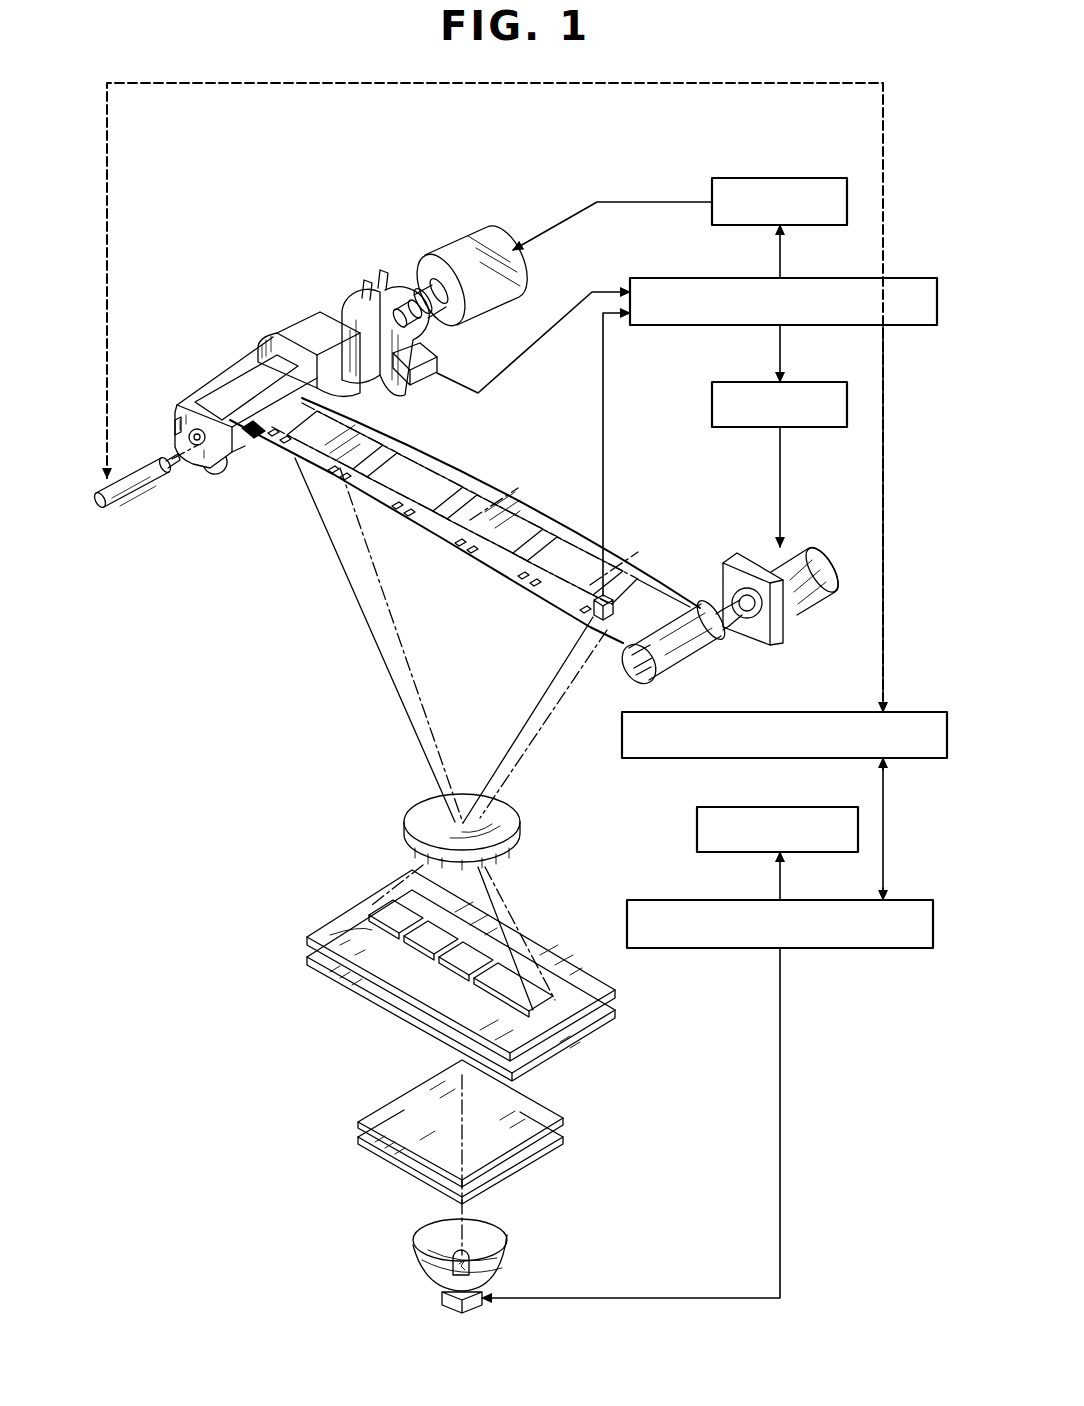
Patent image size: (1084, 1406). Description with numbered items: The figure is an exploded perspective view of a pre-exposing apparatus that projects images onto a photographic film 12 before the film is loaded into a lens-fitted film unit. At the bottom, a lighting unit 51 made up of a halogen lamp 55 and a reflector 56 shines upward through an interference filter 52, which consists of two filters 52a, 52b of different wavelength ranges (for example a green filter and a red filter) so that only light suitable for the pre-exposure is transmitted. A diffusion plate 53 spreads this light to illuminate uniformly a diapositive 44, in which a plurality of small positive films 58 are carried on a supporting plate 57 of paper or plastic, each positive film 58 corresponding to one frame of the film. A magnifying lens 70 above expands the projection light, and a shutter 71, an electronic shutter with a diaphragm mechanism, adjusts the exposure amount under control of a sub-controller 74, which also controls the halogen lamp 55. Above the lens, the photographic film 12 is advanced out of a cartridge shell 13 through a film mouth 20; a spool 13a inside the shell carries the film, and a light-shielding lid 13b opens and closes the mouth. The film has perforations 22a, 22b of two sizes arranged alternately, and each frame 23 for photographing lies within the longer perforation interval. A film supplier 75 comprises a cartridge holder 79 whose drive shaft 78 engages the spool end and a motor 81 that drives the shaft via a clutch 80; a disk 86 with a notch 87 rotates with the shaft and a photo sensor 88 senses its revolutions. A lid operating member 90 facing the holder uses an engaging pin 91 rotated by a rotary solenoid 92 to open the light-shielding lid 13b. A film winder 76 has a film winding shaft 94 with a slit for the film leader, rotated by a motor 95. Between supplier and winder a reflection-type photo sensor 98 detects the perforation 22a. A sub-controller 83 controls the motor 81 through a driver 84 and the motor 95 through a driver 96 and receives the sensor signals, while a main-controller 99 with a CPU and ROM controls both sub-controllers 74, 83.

The photographic film 12 is at (465, 520).
The cartridge shell 13 is at (234, 418).
The spool 13a is at (176, 422).
The light-shielding lid 13b is at (222, 462).
The film mouth 20 is at (300, 392).
The perforation 22a is at (530, 585).
The perforation 22b is at (520, 570).
The frame 23 is at (512, 492).
The diapositive 44 is at (438, 956).
The lighting unit 51 is at (425, 1250).
The interference filter 52 is at (456, 1132).
The filter 52a is at (548, 1152).
The filter 52b is at (540, 1100).
The diffusion plate 53 is at (360, 985).
The halogen lamp 55 is at (474, 1262).
The reflector 56 is at (432, 1232).
The supporting plate 57 is at (438, 965).
The positive film 58 is at (372, 920).
The magnifying lens 70 is at (420, 818).
The shutter 71 is at (697, 820).
The sub-controller 74 is at (738, 948).
The film supplier 75 is at (200, 240).
The film winder 76 is at (678, 487).
The drive shaft 78 is at (345, 318).
The cartridge holder 79 is at (395, 372).
The clutch 80 is at (412, 290).
The motor 81 is at (475, 240).
The sub-controller 83 is at (676, 278).
The driver 84 is at (780, 178).
The disk 86 is at (362, 290).
The notch 87 is at (380, 280).
The photo sensor 88 is at (440, 354).
The lid operating member 90 is at (160, 497).
The engaging pin 91 is at (160, 486).
The rotary solenoid 92 is at (160, 470).
The film winding shaft 94 is at (634, 682).
The motor 95 is at (815, 545).
The driver 96 is at (712, 404).
The reflection-type photo sensor 98 is at (590, 615).
The main-controller 99 is at (812, 712).